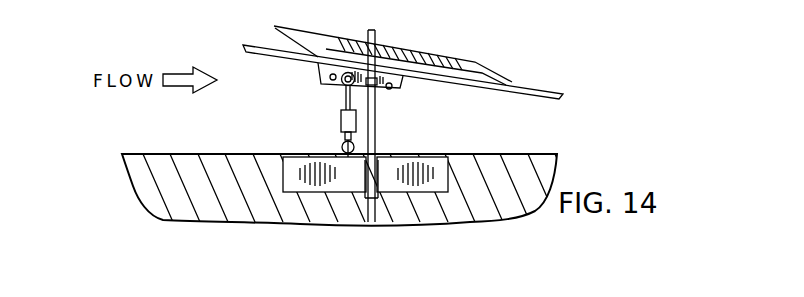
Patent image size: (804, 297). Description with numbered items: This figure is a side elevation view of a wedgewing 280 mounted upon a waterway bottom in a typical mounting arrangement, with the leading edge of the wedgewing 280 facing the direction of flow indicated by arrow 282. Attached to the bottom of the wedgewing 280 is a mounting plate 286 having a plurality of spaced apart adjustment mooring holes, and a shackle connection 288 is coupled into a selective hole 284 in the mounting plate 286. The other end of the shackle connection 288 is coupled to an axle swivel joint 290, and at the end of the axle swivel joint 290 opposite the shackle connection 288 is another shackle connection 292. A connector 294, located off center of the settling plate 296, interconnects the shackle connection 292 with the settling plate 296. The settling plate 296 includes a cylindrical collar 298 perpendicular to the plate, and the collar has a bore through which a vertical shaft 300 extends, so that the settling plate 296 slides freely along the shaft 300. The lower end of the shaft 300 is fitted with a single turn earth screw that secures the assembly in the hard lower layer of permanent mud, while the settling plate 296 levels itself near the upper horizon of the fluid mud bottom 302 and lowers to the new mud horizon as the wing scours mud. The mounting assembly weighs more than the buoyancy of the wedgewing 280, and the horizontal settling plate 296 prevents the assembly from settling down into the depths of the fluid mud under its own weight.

The wedgewing 280 is at (515, 82).
The arrow 282 is at (175, 72).
The selective hole 284 is at (400, 77).
The mounting plate 286 is at (388, 89).
The shackle connection 288 is at (344, 94).
The axle swivel joint 290 is at (340, 117).
The shackle connection 292 is at (341, 133).
The connector 294 is at (340, 144).
The settling plate 296 is at (442, 154).
The cylindrical collar 298 is at (362, 197).
The vertical shaft 300 is at (377, 137).
The fluid mud bottom 302 is at (438, 173).